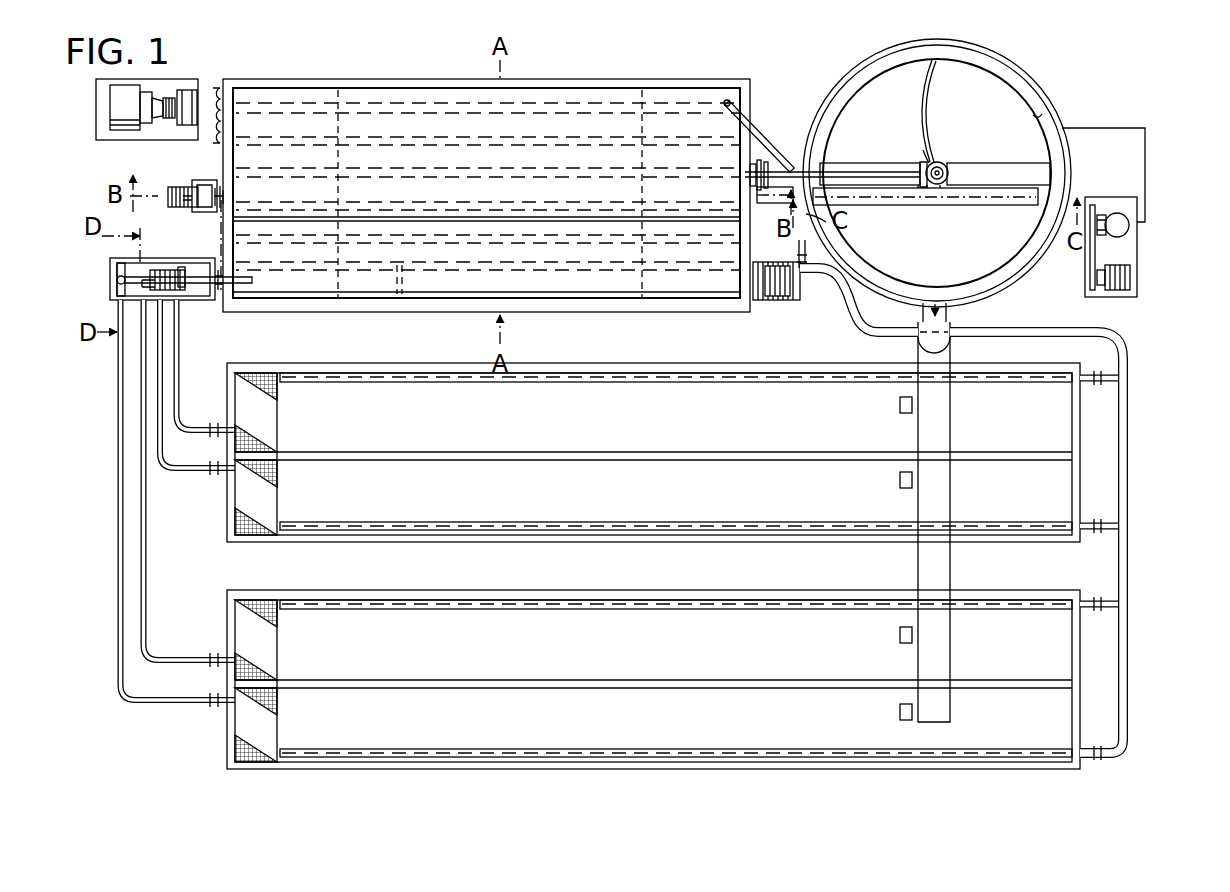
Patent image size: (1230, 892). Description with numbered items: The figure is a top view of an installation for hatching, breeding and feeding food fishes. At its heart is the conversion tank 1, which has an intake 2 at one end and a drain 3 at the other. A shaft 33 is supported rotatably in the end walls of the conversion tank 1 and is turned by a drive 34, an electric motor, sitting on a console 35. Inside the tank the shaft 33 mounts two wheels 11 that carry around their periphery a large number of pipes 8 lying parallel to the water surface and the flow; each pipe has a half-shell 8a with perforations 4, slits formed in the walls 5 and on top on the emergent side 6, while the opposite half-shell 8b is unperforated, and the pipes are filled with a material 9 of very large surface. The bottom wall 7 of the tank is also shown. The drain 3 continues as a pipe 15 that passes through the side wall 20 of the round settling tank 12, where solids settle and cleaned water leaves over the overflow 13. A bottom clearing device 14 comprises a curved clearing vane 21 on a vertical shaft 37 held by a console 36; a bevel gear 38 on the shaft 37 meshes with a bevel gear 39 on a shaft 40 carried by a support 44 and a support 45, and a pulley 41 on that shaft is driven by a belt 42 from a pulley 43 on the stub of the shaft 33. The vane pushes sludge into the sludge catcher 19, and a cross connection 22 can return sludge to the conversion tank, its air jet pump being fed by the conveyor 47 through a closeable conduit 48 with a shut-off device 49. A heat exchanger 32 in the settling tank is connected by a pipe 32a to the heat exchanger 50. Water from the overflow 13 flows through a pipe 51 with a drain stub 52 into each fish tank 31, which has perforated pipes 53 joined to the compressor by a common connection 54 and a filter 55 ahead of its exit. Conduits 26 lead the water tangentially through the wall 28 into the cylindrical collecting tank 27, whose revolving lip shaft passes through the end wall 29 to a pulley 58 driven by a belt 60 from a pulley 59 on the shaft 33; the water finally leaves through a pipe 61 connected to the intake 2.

The conversion tank 1 is at (659, 80).
The intake 2 is at (255, 282).
The drain 3 is at (770, 204).
The perforations 4 is at (461, 100).
The walls 5 is at (408, 92).
The emergent side 6 is at (690, 85).
The bottom wall 7 is at (677, 302).
The pipes 8 is at (288, 125).
The half-shell 8a is at (553, 95).
The half-shell 8b is at (606, 276).
The material 9 is at (400, 296).
The wheels 11 is at (342, 92).
The settling tank 12 is at (1052, 86).
The overflow 13 is at (950, 310).
The bottom clearing device 14 is at (955, 158).
The pipe 15 is at (980, 206).
The sludge catcher 19 is at (806, 146).
The side wall 20 is at (1024, 74).
The clearing vane 21 is at (932, 84).
The cross connection 22 is at (745, 102).
The conduits 26 is at (178, 432).
The collecting tank 27 is at (128, 266).
The wall 28 is at (196, 300).
The end wall 29 is at (183, 268).
The fish tank 31 is at (532, 432).
The heat exchanger 32 is at (1140, 216).
The pipe 32a is at (1046, 118).
The shaft 33 is at (216, 195).
The drive 34 is at (176, 187).
The console 35 is at (200, 180).
The console 36 is at (1010, 163).
The shaft 37 is at (938, 161).
The bevel gear 38 is at (940, 188).
The bevel gear 39 is at (922, 164).
The shaft 40 is at (872, 165).
The pulley 41 is at (760, 170).
The belt 42 is at (767, 162).
The pulley 43 is at (747, 215).
The support 44 is at (920, 187).
The support 45 is at (754, 163).
The conveyor 47 is at (784, 298).
The closeable conduit 48 is at (776, 300).
The shut-off device 49 is at (806, 268).
The heat exchanger 50 is at (1138, 250).
The pipe 51 is at (952, 487).
The drain stub 52 is at (899, 406).
The perforated pipes 53 is at (788, 384).
The common connection 54 is at (1129, 480).
The filter 55 is at (278, 416).
The pulley 58 is at (220, 294).
The pulley 59 is at (185, 200).
The belt 60 is at (219, 224).
The pipe 61 is at (146, 280).